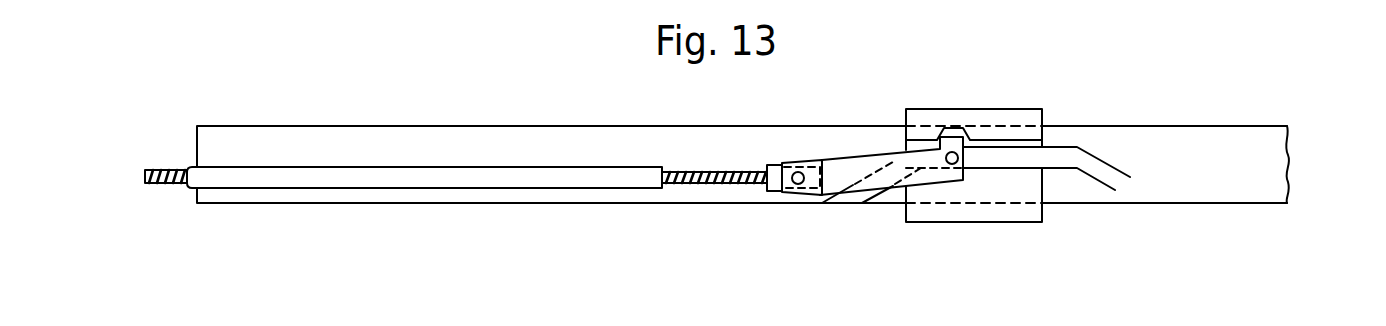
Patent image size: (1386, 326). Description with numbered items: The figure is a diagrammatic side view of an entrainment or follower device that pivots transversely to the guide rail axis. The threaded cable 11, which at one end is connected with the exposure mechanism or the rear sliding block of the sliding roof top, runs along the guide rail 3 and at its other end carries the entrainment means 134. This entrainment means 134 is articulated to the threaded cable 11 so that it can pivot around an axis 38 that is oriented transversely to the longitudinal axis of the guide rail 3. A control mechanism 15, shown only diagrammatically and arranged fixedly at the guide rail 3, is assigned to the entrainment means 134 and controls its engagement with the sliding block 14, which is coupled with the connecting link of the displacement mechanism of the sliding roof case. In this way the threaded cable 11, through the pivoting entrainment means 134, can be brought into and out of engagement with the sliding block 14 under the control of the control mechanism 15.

The guide rail 3 is at (1187, 147).
The threaded cable 11 is at (702, 174).
The sliding block 14 is at (1003, 192).
The control mechanism 15 is at (1073, 158).
The axis 38 is at (797, 186).
The entrainment means 134 is at (852, 167).